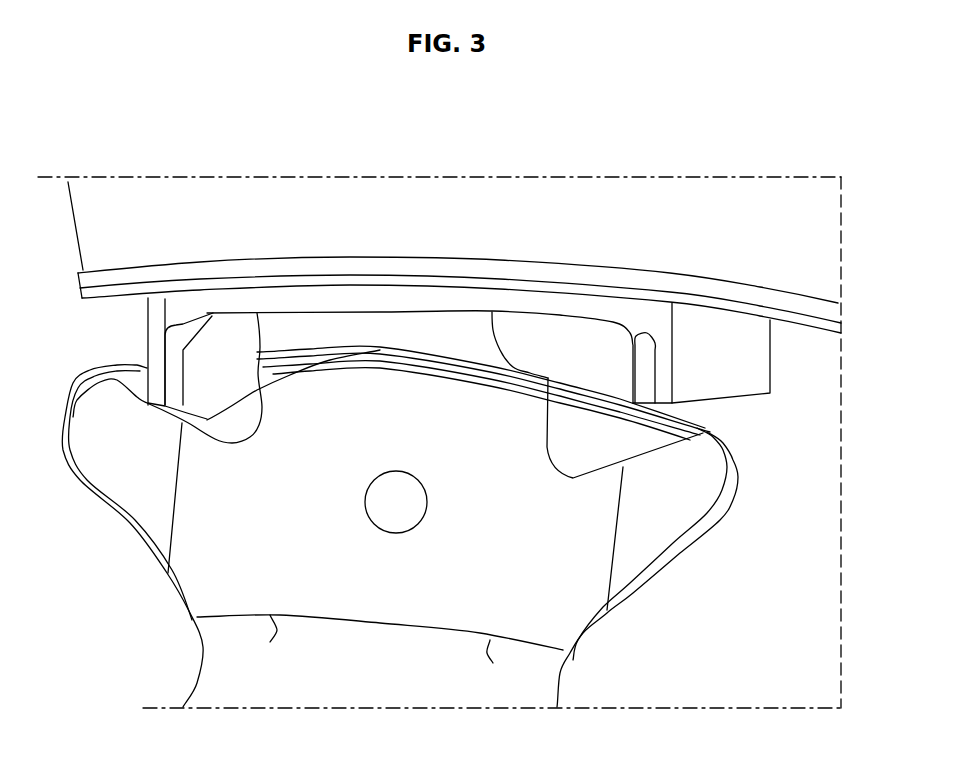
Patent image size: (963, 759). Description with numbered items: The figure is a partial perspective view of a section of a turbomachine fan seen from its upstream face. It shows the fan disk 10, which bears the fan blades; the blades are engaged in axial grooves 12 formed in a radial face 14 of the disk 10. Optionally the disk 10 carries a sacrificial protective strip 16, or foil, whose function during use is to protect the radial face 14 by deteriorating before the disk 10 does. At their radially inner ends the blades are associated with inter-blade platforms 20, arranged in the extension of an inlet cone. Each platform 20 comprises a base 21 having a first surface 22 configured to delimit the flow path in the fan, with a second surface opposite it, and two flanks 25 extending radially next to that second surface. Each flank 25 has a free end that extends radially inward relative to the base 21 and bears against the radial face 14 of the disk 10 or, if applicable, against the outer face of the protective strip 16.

The fan disk 10 is at (408, 575).
The axial groove 12 is at (718, 668).
The radial face 14 is at (643, 447).
The sacrificial protective strip 16 is at (730, 470).
The inter-blade platform 20 is at (820, 258).
The base 21 is at (115, 282).
The first surface 22 is at (407, 233).
The flank 25 is at (740, 360).